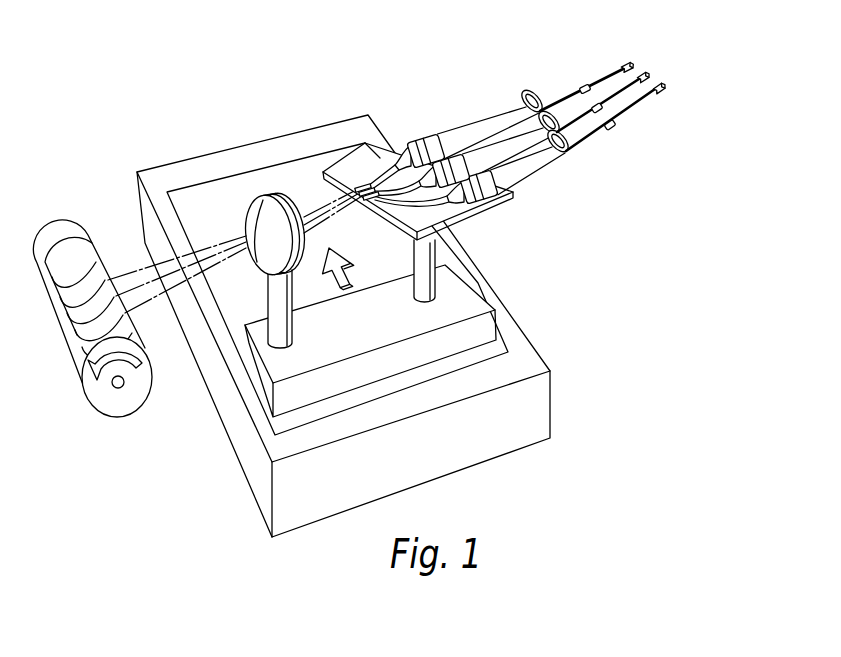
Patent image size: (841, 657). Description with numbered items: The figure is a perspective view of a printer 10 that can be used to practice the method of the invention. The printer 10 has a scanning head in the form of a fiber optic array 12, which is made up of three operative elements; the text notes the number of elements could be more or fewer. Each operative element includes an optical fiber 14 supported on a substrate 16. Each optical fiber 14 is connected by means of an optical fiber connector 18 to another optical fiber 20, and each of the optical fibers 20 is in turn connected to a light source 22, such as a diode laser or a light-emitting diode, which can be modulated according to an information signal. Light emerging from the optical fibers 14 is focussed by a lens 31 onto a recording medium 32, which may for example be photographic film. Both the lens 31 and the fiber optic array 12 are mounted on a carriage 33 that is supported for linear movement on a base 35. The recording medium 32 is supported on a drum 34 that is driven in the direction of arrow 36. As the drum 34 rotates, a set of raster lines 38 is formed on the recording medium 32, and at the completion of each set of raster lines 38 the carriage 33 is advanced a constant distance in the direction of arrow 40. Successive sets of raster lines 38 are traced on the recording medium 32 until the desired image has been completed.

The printer 10 is at (349, 269).
The fiber optic array 12 is at (511, 104).
The optical fiber 14 is at (410, 148).
The substrate 16 is at (453, 211).
The optical fiber connector 18 is at (611, 128).
The optical fiber 20 is at (552, 98).
The light source 22 is at (624, 63).
The lens 31 is at (255, 218).
The recording medium 32 is at (108, 320).
The carriage 33 is at (497, 326).
The drum 34 is at (133, 413).
The base 35 is at (550, 383).
The arrow 36 is at (141, 366).
The raster lines 38 is at (92, 262).
The arrow 40 is at (344, 252).